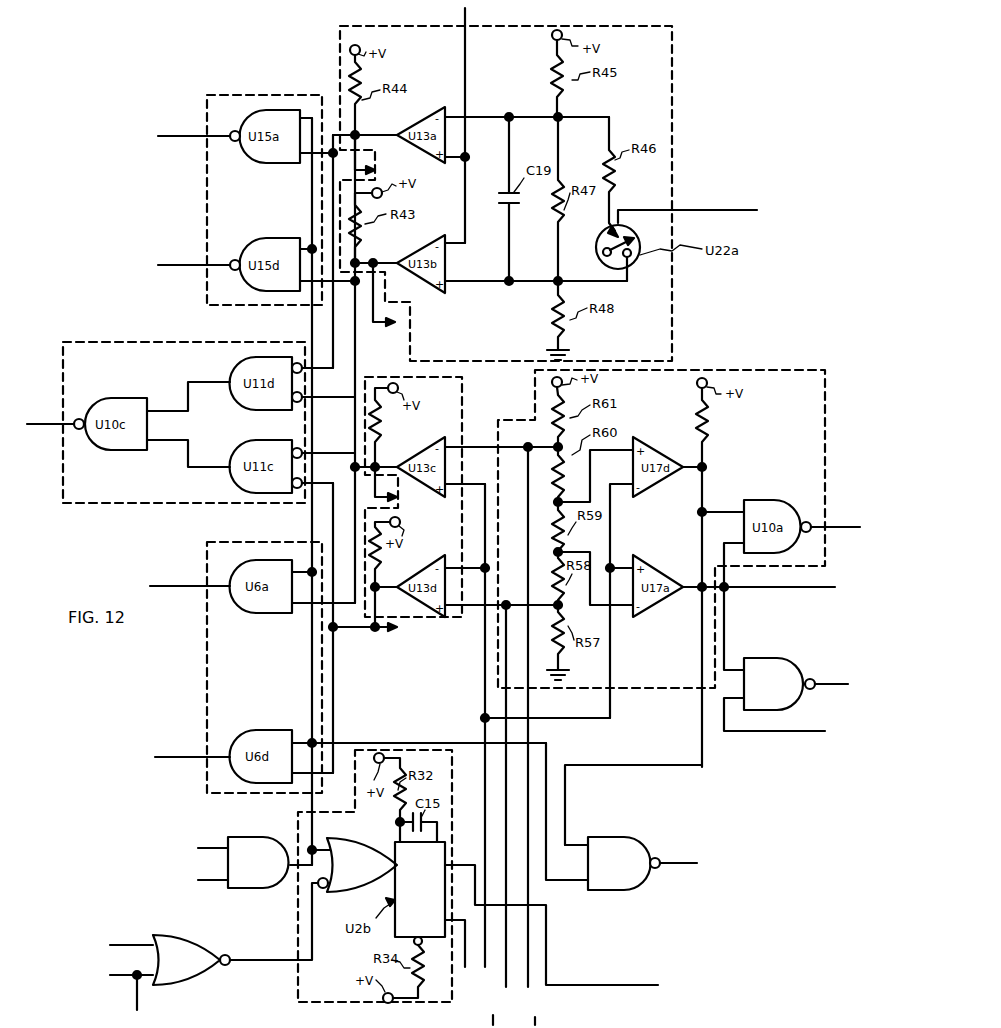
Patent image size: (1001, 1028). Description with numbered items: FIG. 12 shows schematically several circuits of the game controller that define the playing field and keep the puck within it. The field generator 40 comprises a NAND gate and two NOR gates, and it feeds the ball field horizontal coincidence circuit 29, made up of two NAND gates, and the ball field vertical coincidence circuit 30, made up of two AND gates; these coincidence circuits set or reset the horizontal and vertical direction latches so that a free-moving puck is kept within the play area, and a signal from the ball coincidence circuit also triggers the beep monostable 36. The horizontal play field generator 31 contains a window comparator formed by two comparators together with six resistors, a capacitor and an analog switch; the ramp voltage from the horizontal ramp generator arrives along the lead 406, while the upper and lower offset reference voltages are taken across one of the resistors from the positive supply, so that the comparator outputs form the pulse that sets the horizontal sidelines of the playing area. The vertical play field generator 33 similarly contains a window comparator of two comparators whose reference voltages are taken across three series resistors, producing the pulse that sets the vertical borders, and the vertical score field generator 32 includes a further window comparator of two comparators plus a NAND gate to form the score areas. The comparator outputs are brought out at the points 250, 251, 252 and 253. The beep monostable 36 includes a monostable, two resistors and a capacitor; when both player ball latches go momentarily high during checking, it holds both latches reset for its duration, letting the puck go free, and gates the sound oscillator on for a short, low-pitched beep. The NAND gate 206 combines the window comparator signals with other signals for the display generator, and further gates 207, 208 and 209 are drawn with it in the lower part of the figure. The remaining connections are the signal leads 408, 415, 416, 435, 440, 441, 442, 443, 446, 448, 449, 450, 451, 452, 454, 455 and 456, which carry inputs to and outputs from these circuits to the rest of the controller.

The ball field horizontal coincidence circuit 29 is at (205, 192).
The ball field vertical coincidence circuit 30 is at (207, 658).
The horizontal play field generator 31 is at (674, 310).
The vertical score field generator 32 is at (778, 368).
The vertical play field generator 33 is at (465, 410).
The beep monostable 36 is at (298, 990).
The field generator 40 is at (68, 343).
The NAND gate 206 is at (788, 666).
The AND gate 207 is at (268, 876).
The NAND gate 208 is at (614, 870).
The NOR gate 209 is at (180, 955).
The test point output 250 is at (372, 166).
The test point output 251 is at (384, 326).
The test point output 252 is at (400, 504).
The test point output 253 is at (388, 632).
The lead 406 is at (465, 22).
The signal line 408 is at (119, 985).
The signal line 415 is at (55, 425).
The output line 416 is at (846, 684).
The input line 435 is at (200, 134).
The signal line 440 is at (528, 966).
The signal line 441 is at (506, 975).
The signal line 442 is at (465, 968).
The signal line 443 is at (835, 590).
The signal line 446 is at (487, 945).
The signal line 448 is at (810, 733).
The output line 449 is at (668, 860).
The input line 450 is at (200, 267).
The signal line 451 is at (698, 210).
The input line 452 is at (198, 756).
The input line 454 is at (140, 943).
The signal line 455 is at (616, 983).
The signal line 456 is at (260, 962).